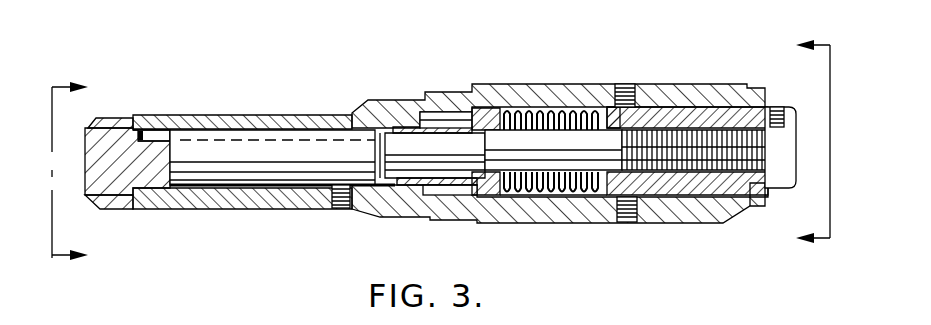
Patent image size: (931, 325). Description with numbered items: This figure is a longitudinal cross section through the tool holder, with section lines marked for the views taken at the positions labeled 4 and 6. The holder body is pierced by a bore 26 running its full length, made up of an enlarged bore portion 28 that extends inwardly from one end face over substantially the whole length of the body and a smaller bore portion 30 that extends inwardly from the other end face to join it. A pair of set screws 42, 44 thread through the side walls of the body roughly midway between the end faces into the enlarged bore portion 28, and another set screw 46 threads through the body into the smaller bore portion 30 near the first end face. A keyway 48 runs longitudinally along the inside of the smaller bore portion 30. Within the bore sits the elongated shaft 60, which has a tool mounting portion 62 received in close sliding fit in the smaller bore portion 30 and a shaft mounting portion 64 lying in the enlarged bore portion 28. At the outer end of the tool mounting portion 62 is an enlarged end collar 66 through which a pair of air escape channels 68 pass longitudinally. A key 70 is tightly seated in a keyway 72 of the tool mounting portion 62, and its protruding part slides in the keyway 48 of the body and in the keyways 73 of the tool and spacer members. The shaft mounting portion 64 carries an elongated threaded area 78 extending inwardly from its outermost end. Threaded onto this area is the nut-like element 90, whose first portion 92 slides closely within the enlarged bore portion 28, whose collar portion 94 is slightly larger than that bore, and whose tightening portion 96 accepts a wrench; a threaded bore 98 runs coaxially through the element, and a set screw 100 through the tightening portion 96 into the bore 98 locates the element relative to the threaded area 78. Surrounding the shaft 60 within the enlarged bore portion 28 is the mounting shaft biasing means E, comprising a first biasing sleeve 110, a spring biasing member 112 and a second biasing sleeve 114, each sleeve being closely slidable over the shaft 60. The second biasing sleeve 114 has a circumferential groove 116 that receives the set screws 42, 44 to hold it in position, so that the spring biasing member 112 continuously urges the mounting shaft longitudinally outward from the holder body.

The section line 4- 4 is at (90, 168).
The section line 6- 6 is at (798, 145).
The bore 26 is at (439, 118).
The enlarged bore portion 28 is at (478, 110).
The smaller bore portion 30 is at (405, 187).
The set screw 42 is at (631, 84).
The set screw 44 is at (632, 223).
The set screw 46 is at (342, 210).
The keyway 48 is at (396, 127).
The elongated shaft 60 is at (277, 152).
The tool mounting portion 62 is at (303, 182).
The shaft mounting portion 64 is at (530, 141).
The end collar 66 is at (103, 177).
The air escape channels 68 is at (118, 125).
The key 70 is at (168, 133).
The keyway 72 is at (143, 137).
The keyways 73 is at (133, 136).
The threaded area 78 is at (778, 143).
The nut-like element 90 is at (726, 206).
The first portion 92 is at (690, 117).
The collar portion 94 is at (763, 91).
The tightening portion 96 is at (773, 183).
The threaded bore 98 is at (672, 200).
The set screw 100 is at (777, 102).
The first biasing sleeve 110 is at (453, 187).
The spring biasing member 112 is at (507, 218).
The second biasing sleeve 114 is at (613, 200).
The groove 116 is at (637, 113).
The mounting shaft biasing means E is at (544, 203).